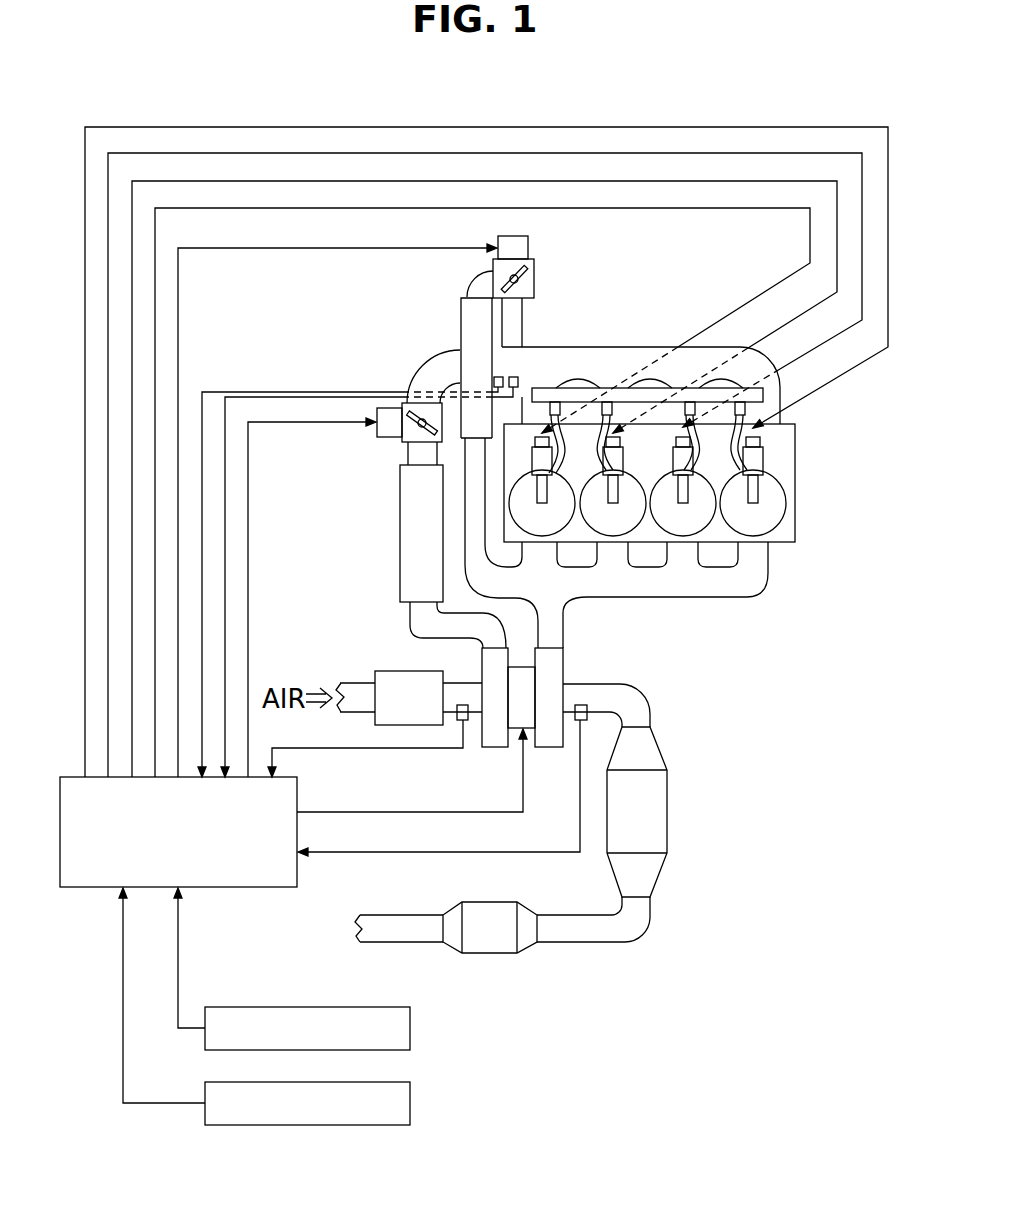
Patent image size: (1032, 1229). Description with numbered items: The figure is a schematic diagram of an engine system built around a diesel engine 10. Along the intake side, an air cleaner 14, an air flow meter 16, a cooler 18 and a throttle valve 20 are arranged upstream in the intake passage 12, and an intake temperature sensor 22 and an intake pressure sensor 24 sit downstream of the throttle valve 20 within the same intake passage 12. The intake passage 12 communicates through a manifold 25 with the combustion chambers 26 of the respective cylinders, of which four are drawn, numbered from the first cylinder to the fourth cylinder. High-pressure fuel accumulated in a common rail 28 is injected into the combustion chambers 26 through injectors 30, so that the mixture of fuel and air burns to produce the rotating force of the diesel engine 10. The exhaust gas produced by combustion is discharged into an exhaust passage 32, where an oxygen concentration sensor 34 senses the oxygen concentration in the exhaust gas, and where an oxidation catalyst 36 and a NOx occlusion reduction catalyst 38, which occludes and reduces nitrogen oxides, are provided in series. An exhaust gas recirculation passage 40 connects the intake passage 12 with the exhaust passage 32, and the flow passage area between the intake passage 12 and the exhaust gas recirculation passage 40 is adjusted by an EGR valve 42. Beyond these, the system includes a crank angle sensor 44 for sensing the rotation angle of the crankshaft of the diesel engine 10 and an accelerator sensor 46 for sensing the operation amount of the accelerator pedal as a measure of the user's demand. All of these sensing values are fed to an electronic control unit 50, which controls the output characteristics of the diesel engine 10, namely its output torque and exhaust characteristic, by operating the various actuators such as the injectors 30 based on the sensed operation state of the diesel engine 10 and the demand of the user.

The diesel engine 10 is at (672, 284).
The intake passage 12 is at (420, 375).
The air cleaner 14 is at (385, 671).
The air flow meter 16 is at (466, 720).
The cooler 18 is at (400, 537).
The throttle valve 20 is at (410, 443).
The intake temperature sensor 22 is at (498, 377).
The intake pressure sensor 24 is at (513, 377).
The manifold 25 is at (628, 345).
The combustion chambers 26 is at (554, 532).
The common rail 28 is at (763, 395).
The injectors 30 is at (795, 464).
The exhaust passage 32 is at (557, 630).
The oxygen concentration sensor 34 is at (578, 720).
The oxidation catalyst 36 is at (667, 812).
The NOx occlusion reduction catalyst 38 is at (490, 953).
The exhaust gas recirculation passage 40 is at (470, 279).
The EGR valve 42 is at (534, 278).
The crank angle sensor 44 is at (410, 1028).
The accelerator sensor 46 is at (410, 1103).
The electronic control unit 50 is at (85, 887).